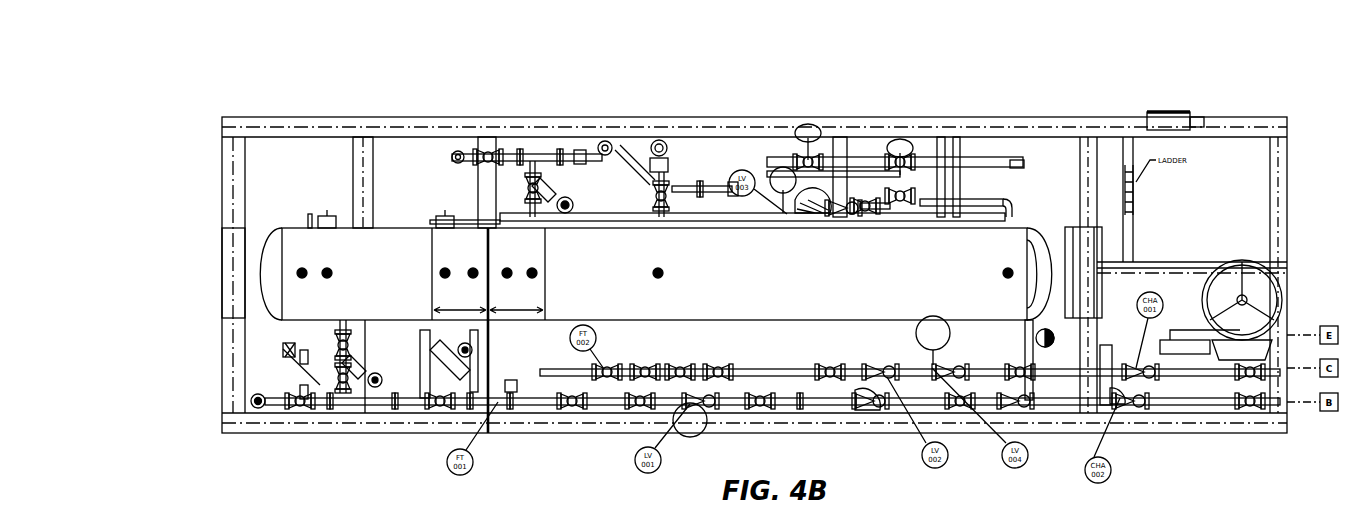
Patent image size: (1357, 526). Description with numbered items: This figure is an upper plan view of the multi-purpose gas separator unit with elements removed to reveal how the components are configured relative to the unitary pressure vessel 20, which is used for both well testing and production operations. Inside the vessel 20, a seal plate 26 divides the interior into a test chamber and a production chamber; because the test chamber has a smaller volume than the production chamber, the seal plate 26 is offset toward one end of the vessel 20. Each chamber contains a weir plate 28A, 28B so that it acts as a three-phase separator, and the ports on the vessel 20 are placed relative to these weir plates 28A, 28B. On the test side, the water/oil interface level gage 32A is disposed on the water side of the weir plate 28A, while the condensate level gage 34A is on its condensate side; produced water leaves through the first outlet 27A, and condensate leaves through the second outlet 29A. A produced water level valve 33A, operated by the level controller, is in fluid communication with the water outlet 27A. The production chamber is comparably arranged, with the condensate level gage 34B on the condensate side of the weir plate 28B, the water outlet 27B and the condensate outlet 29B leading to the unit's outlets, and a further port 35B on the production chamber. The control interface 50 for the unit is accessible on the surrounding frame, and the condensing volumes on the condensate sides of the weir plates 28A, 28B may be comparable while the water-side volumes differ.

The pressure vessel 20 is at (818, 264).
The seal plate 26 is at (486, 236).
The water outlet 27A is at (298, 271).
The water outlet 27B is at (1009, 268).
The weir plate 28A is at (437, 275).
The weir plate 28B is at (537, 275).
The condensate outlet 29A is at (471, 268).
The condensate outlet 29B is at (506, 268).
The level gage 32A is at (324, 269).
The level valve 33A is at (284, 351).
The level gage 34A is at (443, 268).
The level gage 34B is at (531, 268).
The port 35B is at (660, 278).
The control interface 50 is at (1175, 111).